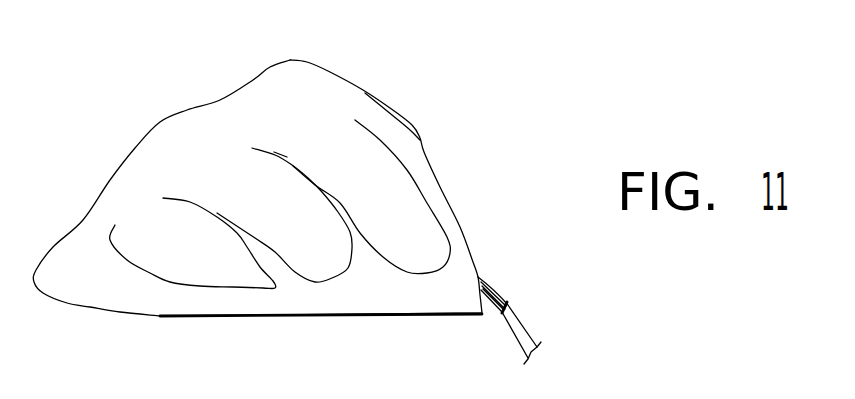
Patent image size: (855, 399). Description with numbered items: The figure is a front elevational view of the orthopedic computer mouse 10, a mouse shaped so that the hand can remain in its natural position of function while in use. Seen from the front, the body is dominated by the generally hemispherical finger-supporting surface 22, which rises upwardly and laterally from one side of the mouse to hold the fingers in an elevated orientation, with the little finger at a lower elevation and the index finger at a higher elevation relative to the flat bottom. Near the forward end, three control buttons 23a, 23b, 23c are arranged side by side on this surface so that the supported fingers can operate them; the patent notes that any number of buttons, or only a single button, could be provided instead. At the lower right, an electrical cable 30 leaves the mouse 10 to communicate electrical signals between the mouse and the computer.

The orthopedic computer mouse 10 is at (283, 56).
The generally hemispherical finger-supporting surface 22 is at (160, 143).
The control button 23a is at (210, 230).
The control button 23b is at (305, 210).
The control button 23c is at (427, 206).
The electrical cable 30 is at (518, 322).